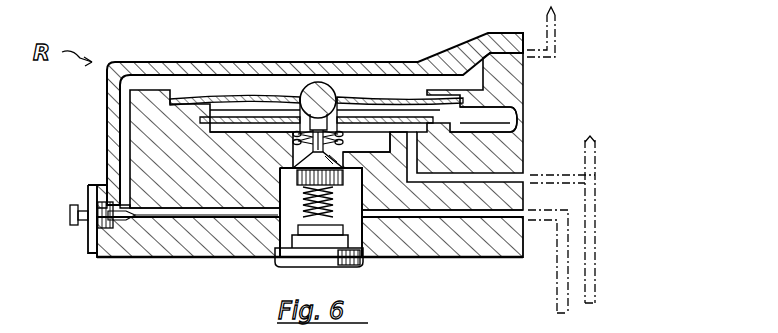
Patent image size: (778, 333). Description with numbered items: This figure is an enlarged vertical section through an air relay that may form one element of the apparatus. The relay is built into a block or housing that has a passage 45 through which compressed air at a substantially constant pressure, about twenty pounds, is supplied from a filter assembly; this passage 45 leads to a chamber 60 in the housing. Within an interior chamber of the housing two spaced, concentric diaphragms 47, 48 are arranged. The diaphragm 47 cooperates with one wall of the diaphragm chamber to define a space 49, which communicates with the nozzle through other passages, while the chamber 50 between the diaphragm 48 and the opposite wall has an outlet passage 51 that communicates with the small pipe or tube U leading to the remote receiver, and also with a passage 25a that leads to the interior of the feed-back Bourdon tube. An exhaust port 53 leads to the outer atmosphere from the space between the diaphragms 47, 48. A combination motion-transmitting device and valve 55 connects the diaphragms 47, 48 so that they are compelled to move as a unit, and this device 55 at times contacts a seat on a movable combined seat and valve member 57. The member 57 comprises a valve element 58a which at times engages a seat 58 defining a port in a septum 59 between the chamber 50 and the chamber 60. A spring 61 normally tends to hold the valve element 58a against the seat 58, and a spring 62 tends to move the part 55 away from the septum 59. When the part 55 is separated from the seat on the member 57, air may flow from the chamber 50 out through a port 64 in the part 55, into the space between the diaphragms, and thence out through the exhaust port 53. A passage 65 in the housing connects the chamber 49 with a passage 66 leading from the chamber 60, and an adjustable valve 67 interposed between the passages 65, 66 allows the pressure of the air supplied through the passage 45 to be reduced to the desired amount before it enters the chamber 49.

The passage 65 is at (148, 78).
The outlet passage 51 is at (527, 163).
The passage 66 is at (173, 217).
The passage 45 is at (492, 215).
The space 49 is at (370, 82).
The exhaust port 53 is at (527, 122).
The chamber 50 is at (387, 133).
The diaphragm 47 is at (277, 100).
The diaphragm 48 is at (231, 116).
The port 64 is at (310, 107).
The combination motion-transmitting device and valve 55 is at (327, 103).
The spring 62 is at (337, 140).
The movable combined seat and valve member 57 is at (240, 160).
The septum 59 is at (348, 172).
The seat 58 is at (297, 173).
The valve element 58a is at (272, 245).
The spring 61 is at (307, 170).
The chamber 60 is at (362, 238).
The adjustable valve 67 is at (118, 235).
The passage 25a is at (603, 156).
The valve conduit V is at (598, 232).